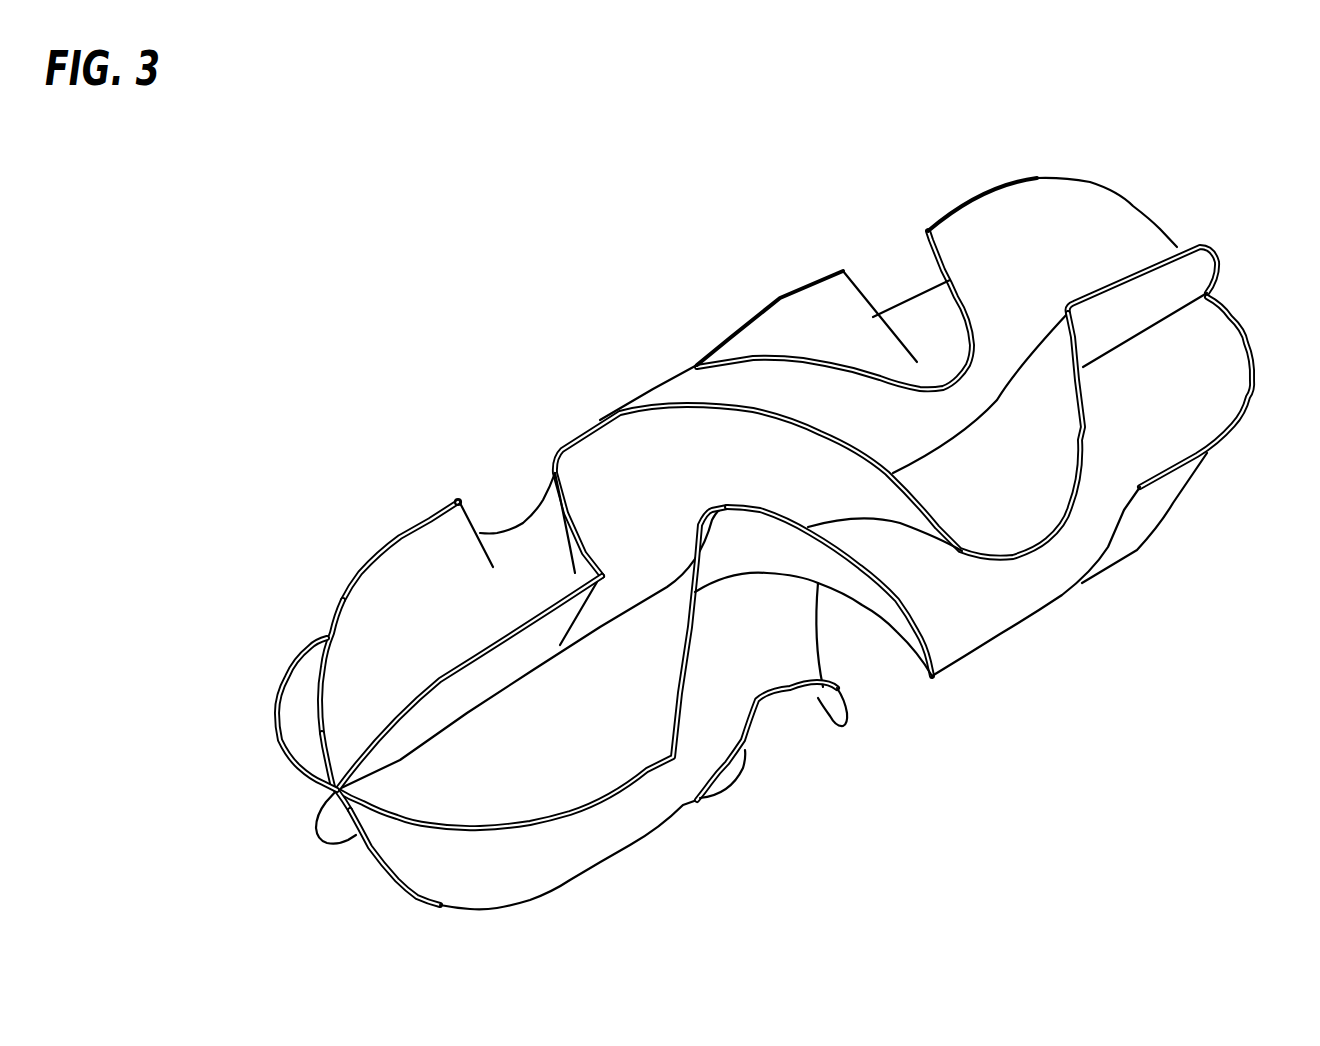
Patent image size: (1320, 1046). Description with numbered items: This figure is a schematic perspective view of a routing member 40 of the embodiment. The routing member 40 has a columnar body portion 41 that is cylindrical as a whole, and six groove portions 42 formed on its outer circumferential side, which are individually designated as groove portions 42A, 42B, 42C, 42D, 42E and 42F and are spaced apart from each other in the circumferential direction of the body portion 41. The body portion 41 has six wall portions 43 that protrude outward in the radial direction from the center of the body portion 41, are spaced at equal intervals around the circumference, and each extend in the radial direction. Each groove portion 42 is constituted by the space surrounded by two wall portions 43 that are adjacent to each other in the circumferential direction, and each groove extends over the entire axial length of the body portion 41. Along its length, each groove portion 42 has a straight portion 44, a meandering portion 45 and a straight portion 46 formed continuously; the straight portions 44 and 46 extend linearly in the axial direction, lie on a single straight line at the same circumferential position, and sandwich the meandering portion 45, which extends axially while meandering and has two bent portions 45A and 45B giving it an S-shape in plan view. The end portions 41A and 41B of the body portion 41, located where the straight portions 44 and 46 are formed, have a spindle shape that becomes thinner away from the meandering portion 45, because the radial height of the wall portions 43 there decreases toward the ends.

The routing member 40 is at (313, 327).
The body portion 41 is at (1032, 181).
The end portion 41A is at (318, 740).
The end portion 41B is at (1197, 283).
The groove portion 42 is at (476, 535).
The groove portion 42A is at (462, 697).
The groove portion 42B is at (527, 877).
The groove portion 42C is at (338, 840).
The groove portion 42D is at (313, 813).
The groove portion 42E is at (300, 683).
The groove portion 42F is at (406, 552).
The wall portion 43 is at (393, 730).
The straight portion 44 is at (419, 453).
The meandering portion 45 is at (896, 177).
The bent portion 45A is at (587, 452).
The bent portion 45B is at (970, 622).
The straight portion 46 is at (1073, 75).